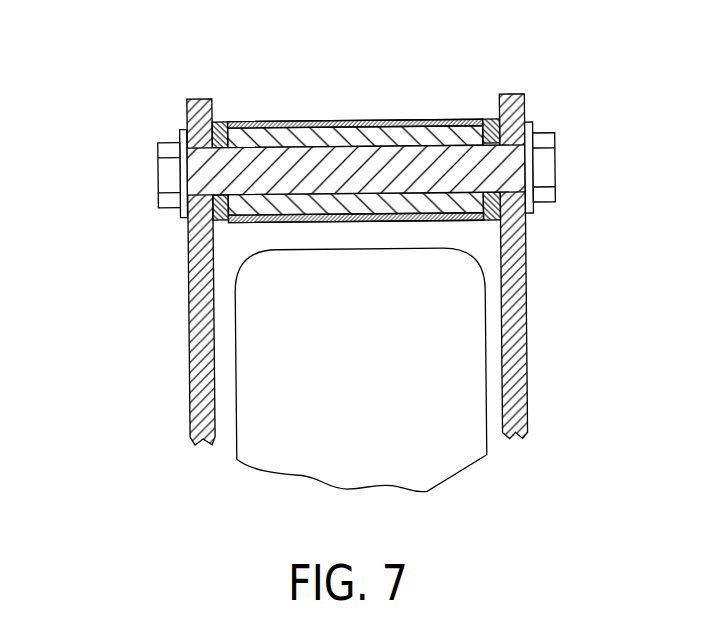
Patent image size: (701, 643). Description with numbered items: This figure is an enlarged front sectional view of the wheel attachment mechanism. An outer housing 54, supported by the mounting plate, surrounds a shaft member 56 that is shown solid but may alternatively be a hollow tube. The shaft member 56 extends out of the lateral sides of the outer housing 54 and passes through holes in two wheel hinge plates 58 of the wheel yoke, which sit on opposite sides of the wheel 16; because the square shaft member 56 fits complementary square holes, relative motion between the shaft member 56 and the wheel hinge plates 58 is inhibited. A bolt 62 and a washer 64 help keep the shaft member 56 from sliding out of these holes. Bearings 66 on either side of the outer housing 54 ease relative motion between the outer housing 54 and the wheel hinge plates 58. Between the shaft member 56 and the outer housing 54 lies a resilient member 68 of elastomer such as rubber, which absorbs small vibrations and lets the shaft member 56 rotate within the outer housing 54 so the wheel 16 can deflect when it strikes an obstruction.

The wheel 16 is at (418, 433).
The outer housing 54 is at (305, 120).
The shaft member 56 is at (526, 103).
The wheel hinge plates 58 is at (188, 353).
The bolt 62 is at (167, 173).
The washer 64 is at (182, 200).
The bearings 66 is at (222, 122).
The resilient member 68 is at (373, 121).